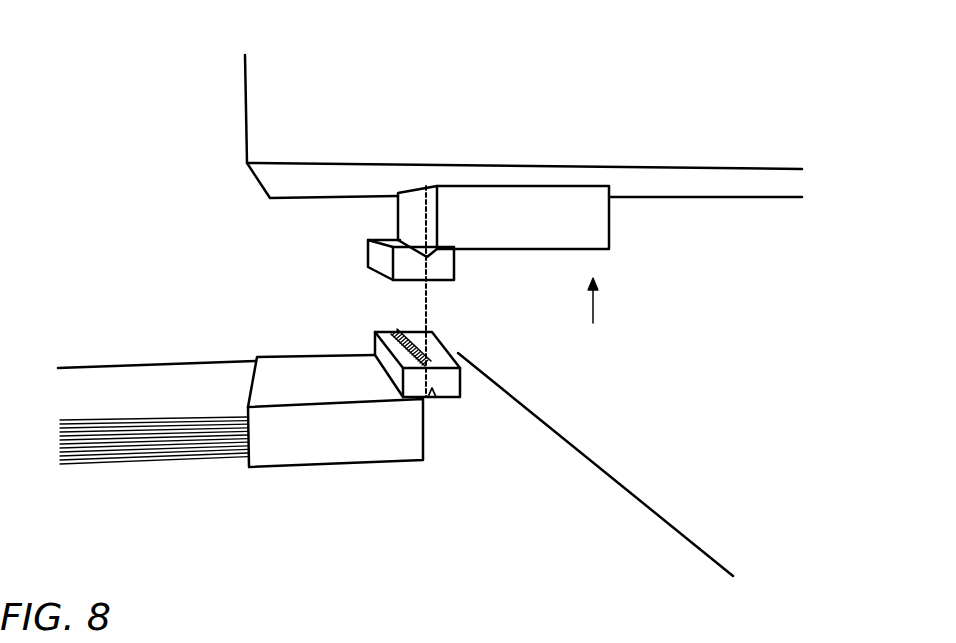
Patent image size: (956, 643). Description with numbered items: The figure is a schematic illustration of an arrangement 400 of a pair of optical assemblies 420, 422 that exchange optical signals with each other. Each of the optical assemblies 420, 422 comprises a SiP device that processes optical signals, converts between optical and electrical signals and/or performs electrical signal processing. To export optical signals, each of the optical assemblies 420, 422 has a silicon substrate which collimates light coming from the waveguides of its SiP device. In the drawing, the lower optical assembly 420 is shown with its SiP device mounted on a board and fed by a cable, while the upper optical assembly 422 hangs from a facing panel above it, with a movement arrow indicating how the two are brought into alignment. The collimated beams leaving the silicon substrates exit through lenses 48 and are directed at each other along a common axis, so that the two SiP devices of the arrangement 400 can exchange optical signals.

The arrangement 400 is at (117, 60).
The optical assembly 420 is at (132, 345).
The optical assembly 422 is at (596, 316).
The lens 48 is at (390, 332).